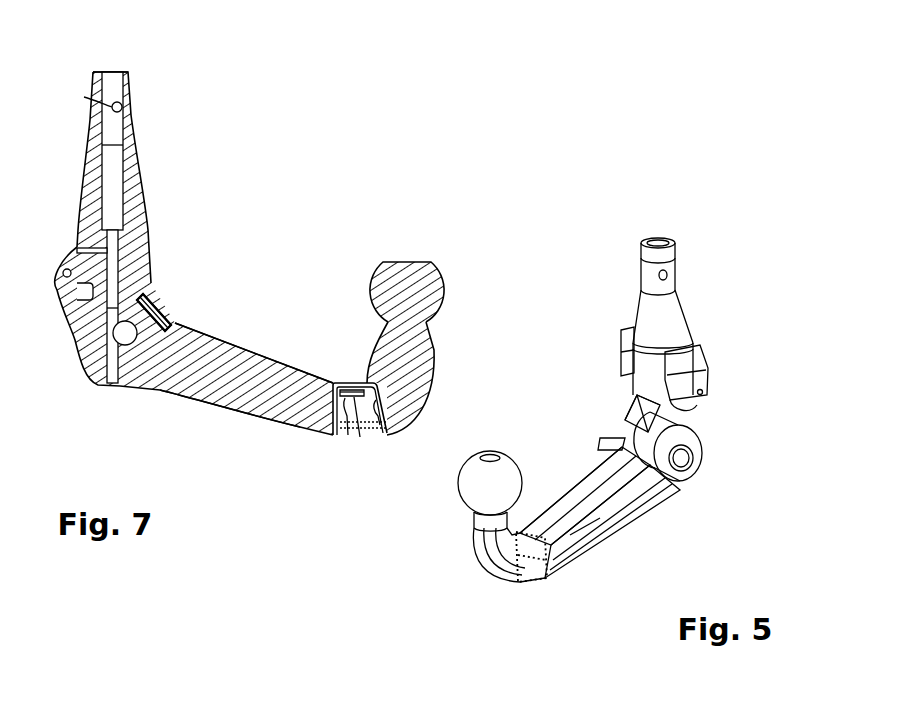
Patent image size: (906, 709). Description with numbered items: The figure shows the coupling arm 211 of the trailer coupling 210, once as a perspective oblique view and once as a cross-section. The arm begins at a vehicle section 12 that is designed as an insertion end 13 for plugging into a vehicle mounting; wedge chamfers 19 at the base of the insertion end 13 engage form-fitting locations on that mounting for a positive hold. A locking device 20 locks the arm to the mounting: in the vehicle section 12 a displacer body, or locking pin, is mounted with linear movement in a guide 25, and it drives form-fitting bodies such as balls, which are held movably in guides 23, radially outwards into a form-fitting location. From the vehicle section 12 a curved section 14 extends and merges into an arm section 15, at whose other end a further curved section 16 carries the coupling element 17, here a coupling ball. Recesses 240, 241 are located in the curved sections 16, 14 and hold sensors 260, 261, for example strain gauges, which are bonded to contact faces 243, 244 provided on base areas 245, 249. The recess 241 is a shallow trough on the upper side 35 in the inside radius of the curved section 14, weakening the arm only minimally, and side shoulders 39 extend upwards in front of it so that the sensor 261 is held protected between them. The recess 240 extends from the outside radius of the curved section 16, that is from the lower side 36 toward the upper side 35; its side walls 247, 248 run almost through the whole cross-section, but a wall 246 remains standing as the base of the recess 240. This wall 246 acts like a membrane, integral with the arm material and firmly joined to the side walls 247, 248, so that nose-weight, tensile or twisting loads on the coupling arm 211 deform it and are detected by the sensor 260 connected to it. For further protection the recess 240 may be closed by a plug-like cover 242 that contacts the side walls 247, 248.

In FIG. 7, the vehicle section 12 is at (140, 137).
In FIG. 5, the vehicle section 12 is at (645, 268).
In FIG. 5, the insertion end 13 is at (675, 308).
In FIG. 7, the curved section 14 is at (82, 352).
In FIG. 7, the arm section 15 is at (231, 350).
In FIG. 5, the arm section 15 is at (625, 512).
In FIG. 7, the curved section 16 is at (420, 399).
In FIG. 5, the curved section 16 is at (492, 575).
In FIG. 7, the coupling element 17 is at (430, 286).
In FIG. 5, the coupling element 17 is at (490, 465).
In FIG. 5, the wedge chamfers 19 is at (625, 340).
In FIG. 7, the locking device 20 is at (142, 97).
In FIG. 7, the guides 23 is at (87, 94).
In FIG. 7, the guide 25 is at (117, 176).
In FIG. 7, the upper side 35 is at (277, 356).
In FIG. 5, the upper side 35 is at (588, 470).
In FIG. 7, the lower side 36 is at (238, 420).
In FIG. 5, the side shoulders 39 is at (625, 438).
In FIG. 5, the trailer coupling 210 is at (718, 140).
In FIG. 7, the coupling arm 211 is at (175, 400).
In FIG. 5, the coupling arm 211 is at (706, 485).
In FIG. 7, the recess 240 is at (358, 411).
In FIG. 5, the recess 240 is at (535, 580).
In FIG. 7, the recess 241 is at (150, 300).
In FIG. 5, the recess 241 is at (625, 438).
In FIG. 7, the cover 242 is at (360, 437).
In FIG. 7, the contact face 243 is at (360, 397).
In FIG. 5, the contact face 244 is at (638, 432).
In FIG. 7, the base area 245 is at (348, 426).
In FIG. 7, the wall 246 is at (365, 375).
In FIG. 7, the side wall 247 is at (340, 432).
In FIG. 7, the side wall 248 is at (378, 420).
In FIG. 5, the base area 249 is at (637, 433).
In FIG. 7, the sensor 260 is at (347, 387).
In FIG. 7, the sensor 261 is at (168, 319).